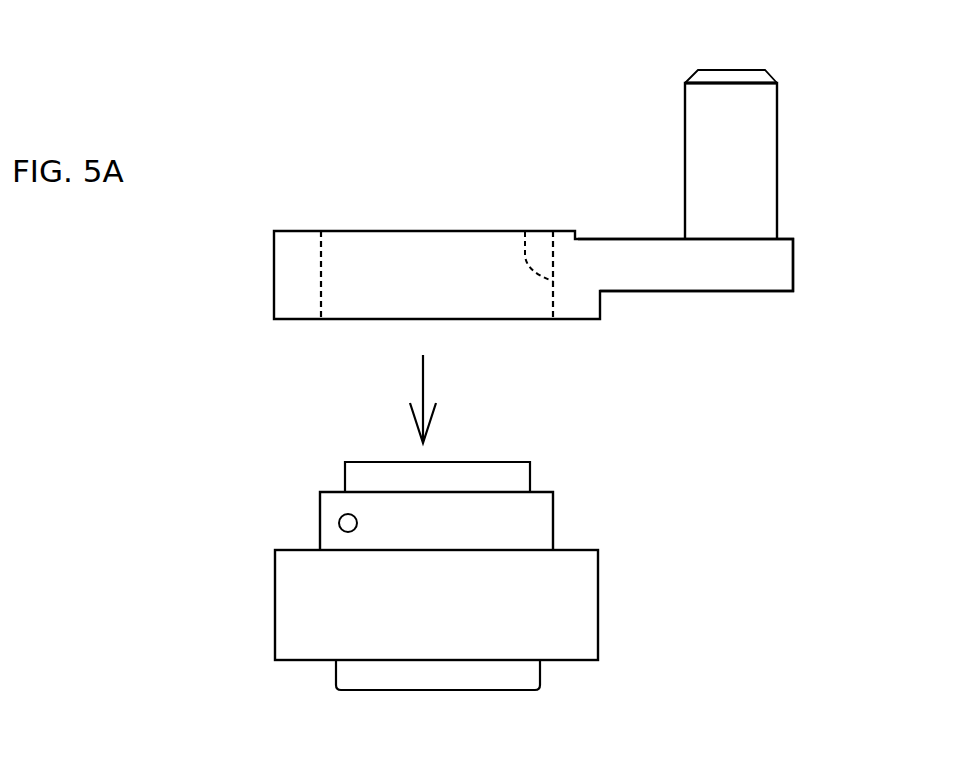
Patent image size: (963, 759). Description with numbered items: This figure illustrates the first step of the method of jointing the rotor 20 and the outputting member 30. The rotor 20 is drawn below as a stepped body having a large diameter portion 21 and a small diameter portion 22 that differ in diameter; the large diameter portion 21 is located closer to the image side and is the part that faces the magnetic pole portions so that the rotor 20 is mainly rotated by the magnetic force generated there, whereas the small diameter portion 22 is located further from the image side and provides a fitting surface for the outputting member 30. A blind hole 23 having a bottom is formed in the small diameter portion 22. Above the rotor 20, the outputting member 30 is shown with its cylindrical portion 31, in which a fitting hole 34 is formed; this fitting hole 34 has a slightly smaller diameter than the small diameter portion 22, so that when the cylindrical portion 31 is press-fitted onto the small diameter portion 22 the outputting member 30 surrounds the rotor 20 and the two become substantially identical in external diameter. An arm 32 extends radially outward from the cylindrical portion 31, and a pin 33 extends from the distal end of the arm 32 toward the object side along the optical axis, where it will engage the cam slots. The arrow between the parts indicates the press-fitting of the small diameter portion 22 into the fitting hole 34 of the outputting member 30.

The rotor 20 is at (444, 604).
The large diameter portion 21 is at (587, 592).
The small diameter portion 22 is at (537, 521).
The blind hole 23 is at (339, 520).
The outputting member 30 is at (547, 194).
The cylindrical portion 31 is at (292, 273).
The arm 32 is at (762, 277).
The pin 33 is at (735, 97).
The fitting hole 34 is at (525, 205).